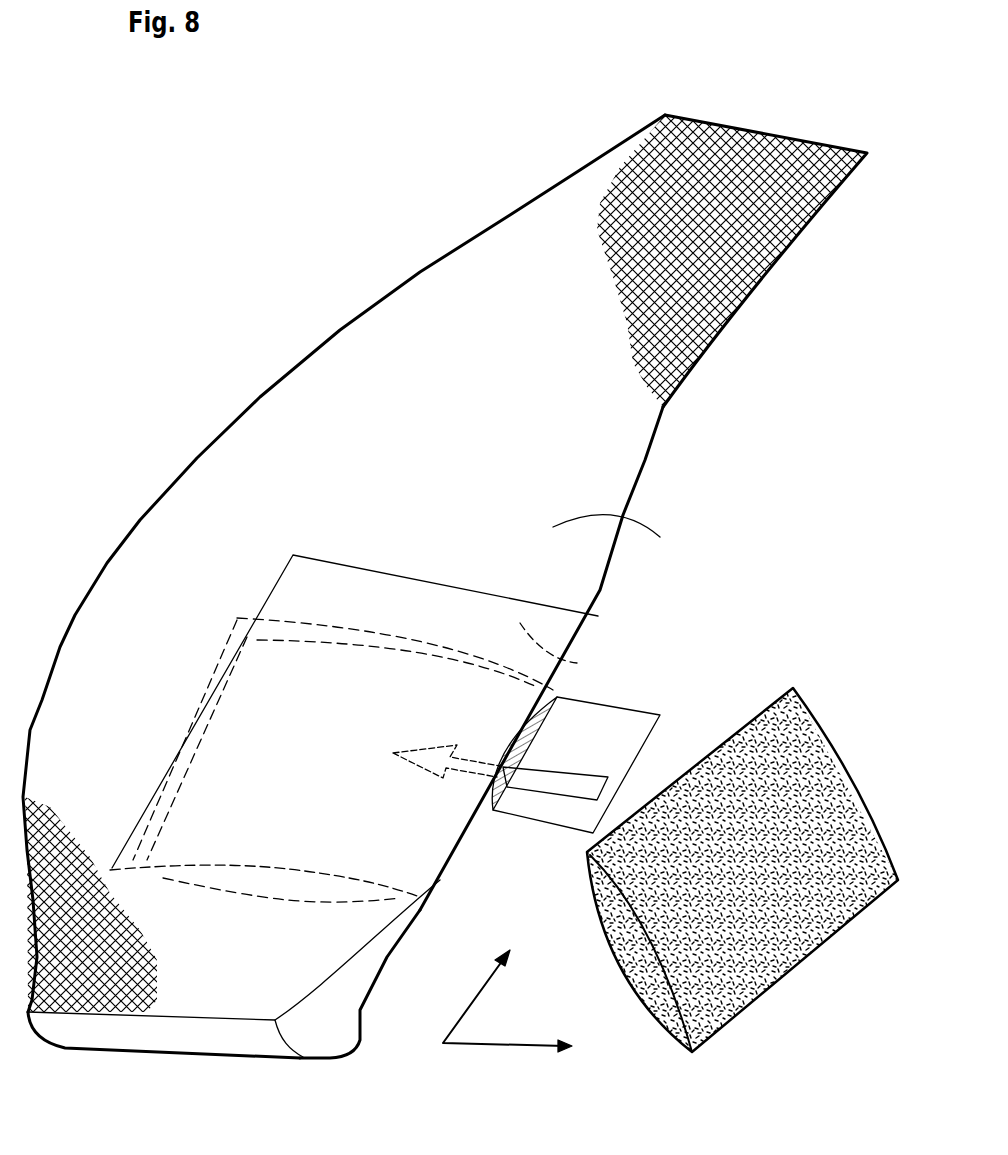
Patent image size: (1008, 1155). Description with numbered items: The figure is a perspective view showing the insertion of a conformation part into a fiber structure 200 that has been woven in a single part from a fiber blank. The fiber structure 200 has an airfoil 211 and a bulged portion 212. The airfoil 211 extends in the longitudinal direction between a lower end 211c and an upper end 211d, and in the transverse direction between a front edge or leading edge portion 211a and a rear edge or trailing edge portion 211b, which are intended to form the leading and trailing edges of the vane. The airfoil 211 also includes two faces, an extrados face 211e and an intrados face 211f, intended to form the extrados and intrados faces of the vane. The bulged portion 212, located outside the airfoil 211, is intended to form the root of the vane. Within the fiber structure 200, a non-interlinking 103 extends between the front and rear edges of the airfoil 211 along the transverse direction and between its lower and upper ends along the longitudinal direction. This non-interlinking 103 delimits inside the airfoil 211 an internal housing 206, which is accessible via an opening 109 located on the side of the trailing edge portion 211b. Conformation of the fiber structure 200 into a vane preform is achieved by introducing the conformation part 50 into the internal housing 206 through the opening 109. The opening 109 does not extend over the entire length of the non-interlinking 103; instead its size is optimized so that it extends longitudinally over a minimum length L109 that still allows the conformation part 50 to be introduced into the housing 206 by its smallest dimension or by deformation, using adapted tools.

The fiber structure 200 is at (313, 222).
The airfoil 211 is at (272, 440).
The leading edge portion 211a is at (108, 562).
The trailing edge portion 211b is at (645, 455).
The lower end 211c is at (420, 908).
The upper end 211d is at (770, 130).
The extrados face 211e is at (623, 540).
The intrados face 211f is at (580, 663).
The bulged portion 212 is at (88, 1033).
The non-interlinking 103 is at (455, 584).
The internal housing 206 is at (267, 827).
The opening 109 is at (547, 738).
The minimum length of the opening L109 is at (633, 772).
The conformation part 50 is at (810, 950).